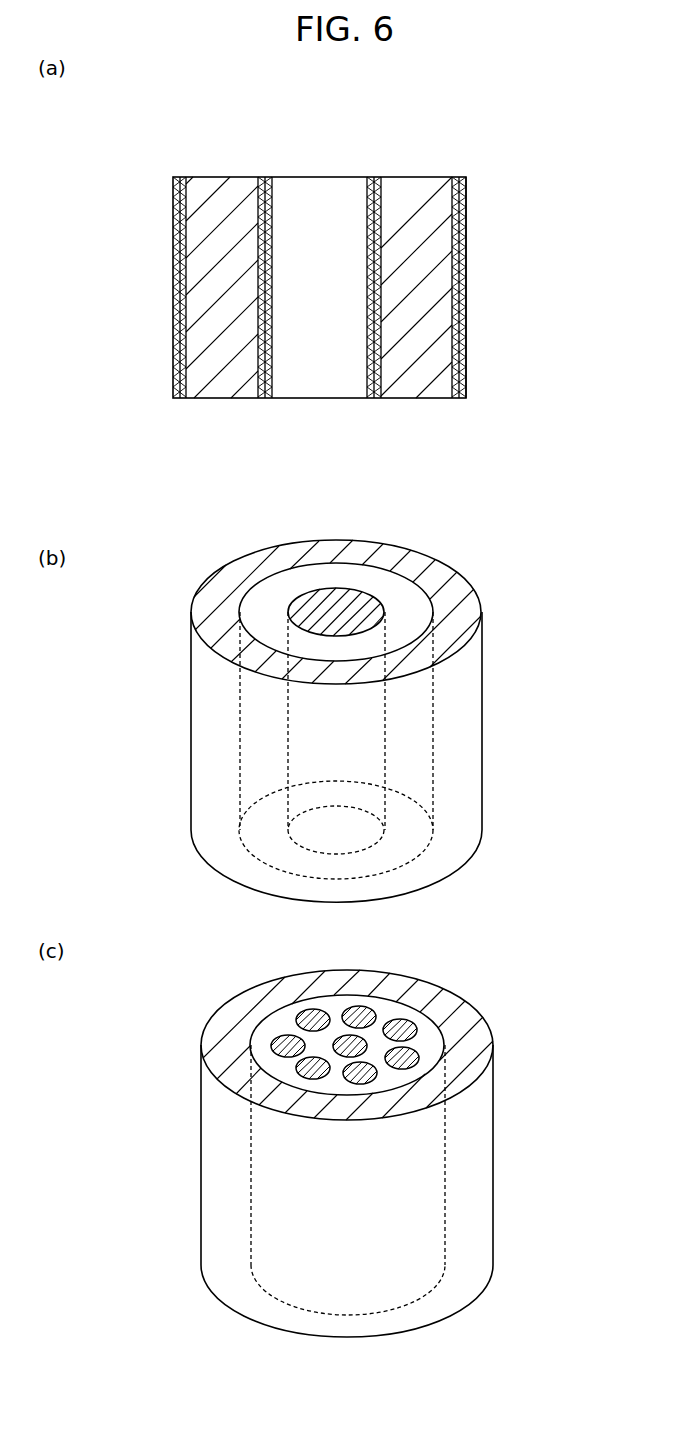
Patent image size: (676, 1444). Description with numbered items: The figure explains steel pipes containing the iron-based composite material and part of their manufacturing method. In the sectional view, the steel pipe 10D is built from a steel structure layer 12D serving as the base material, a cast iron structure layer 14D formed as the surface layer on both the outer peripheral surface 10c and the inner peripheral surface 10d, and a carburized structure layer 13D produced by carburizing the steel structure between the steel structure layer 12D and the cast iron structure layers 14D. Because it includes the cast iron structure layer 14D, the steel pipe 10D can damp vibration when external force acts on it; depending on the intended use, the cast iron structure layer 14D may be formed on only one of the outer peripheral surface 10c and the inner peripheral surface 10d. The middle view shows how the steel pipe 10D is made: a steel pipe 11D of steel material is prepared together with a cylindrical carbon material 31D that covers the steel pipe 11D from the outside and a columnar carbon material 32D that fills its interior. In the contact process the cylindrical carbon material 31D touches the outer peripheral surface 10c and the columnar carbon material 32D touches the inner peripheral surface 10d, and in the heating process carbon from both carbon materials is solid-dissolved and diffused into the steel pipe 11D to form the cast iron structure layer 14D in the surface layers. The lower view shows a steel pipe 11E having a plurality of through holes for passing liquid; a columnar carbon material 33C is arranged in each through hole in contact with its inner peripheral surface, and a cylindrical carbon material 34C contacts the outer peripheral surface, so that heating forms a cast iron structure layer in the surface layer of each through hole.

The steel pipe 10D is at (542, 114).
The cast iron structure layer 14D is at (362, 177).
The carburized structure layer 13D is at (370, 177).
The steel structure layer 12D is at (413, 177).
The inner peripheral surface 10d is at (367, 303).
The outer peripheral surface 10c is at (467, 288).
The steel pipe 11D is at (400, 627).
The cylindrical carbon material 31D is at (417, 560).
The columnar carbon material 32D is at (333, 598).
The columnar carbon material 33C is at (407, 1032).
The cylindrical carbon material 34C is at (475, 1030).
The steel pipe 11E is at (438, 1197).